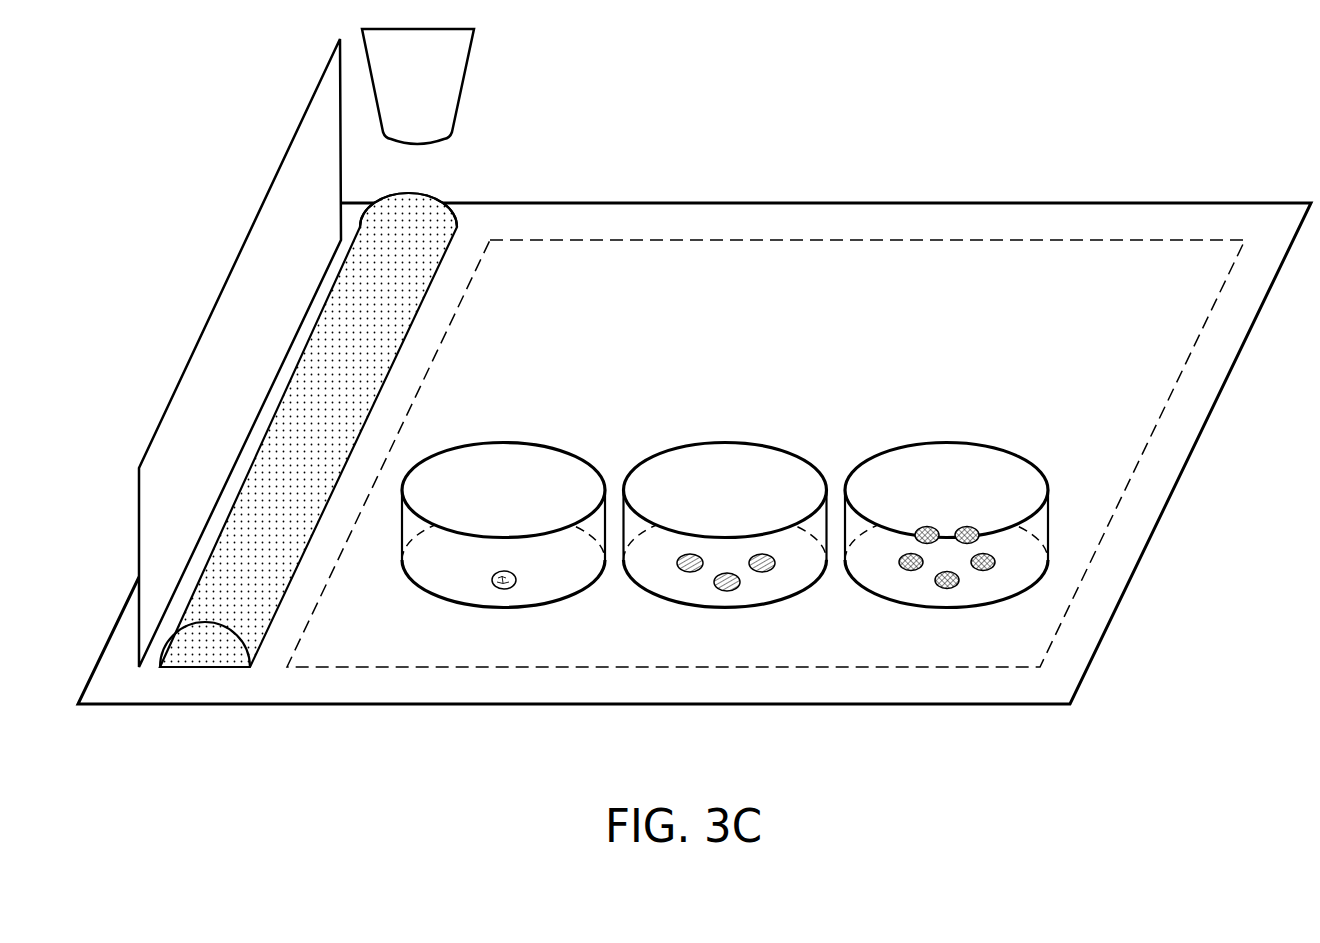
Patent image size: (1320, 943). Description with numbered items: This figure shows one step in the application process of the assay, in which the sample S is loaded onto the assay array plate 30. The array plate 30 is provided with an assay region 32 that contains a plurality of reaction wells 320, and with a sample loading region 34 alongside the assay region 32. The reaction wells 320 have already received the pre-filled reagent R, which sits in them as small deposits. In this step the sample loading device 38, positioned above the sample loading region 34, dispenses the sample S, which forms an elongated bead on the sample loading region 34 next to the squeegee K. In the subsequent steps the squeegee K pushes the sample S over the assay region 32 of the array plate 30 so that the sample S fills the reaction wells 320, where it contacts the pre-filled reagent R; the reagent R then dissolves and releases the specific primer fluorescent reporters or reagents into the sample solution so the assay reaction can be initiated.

The assay array plate 30 is at (276, 684).
The assay region 32 is at (643, 241).
The reaction wells 320 is at (1012, 553).
The sample loading region 34 is at (213, 673).
The sample loading device 38 is at (437, 93).
The squeegee K is at (277, 173).
The sample S is at (421, 192).
The pre-filled reagent R is at (493, 585).